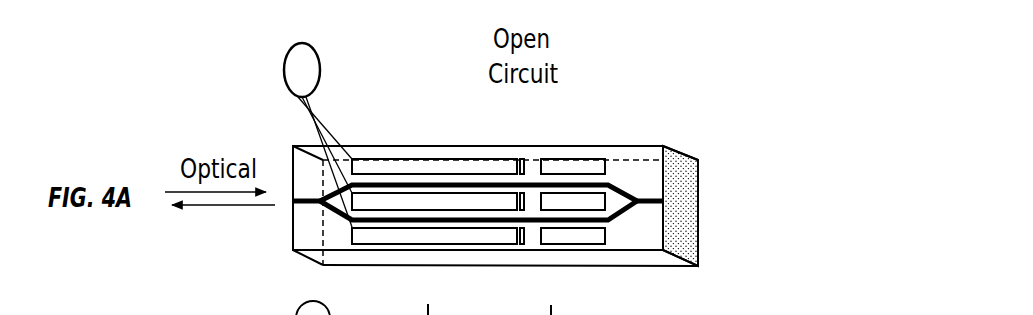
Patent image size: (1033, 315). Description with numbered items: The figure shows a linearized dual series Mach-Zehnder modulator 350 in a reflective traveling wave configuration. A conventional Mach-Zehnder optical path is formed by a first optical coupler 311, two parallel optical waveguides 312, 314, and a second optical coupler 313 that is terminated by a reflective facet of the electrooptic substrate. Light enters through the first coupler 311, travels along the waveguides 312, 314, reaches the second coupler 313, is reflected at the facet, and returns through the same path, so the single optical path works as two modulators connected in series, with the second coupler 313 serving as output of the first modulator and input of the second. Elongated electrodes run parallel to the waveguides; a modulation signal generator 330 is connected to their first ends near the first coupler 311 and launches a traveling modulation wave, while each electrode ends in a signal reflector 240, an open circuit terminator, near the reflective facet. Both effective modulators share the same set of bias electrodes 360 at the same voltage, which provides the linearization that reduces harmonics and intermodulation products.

The signal reflector 240 is at (522, 153).
The first optical coupler 311 is at (262, 150).
The optical waveguide 312 is at (478, 158).
The second optical coupler 313 is at (658, 157).
The optical waveguide 314 is at (478, 251).
The modulation signal generator 330 is at (282, 128).
The linearized dual series Mach-Zehnder modulator 350 is at (495, 144).
The bias electrodes 360 is at (616, 237).